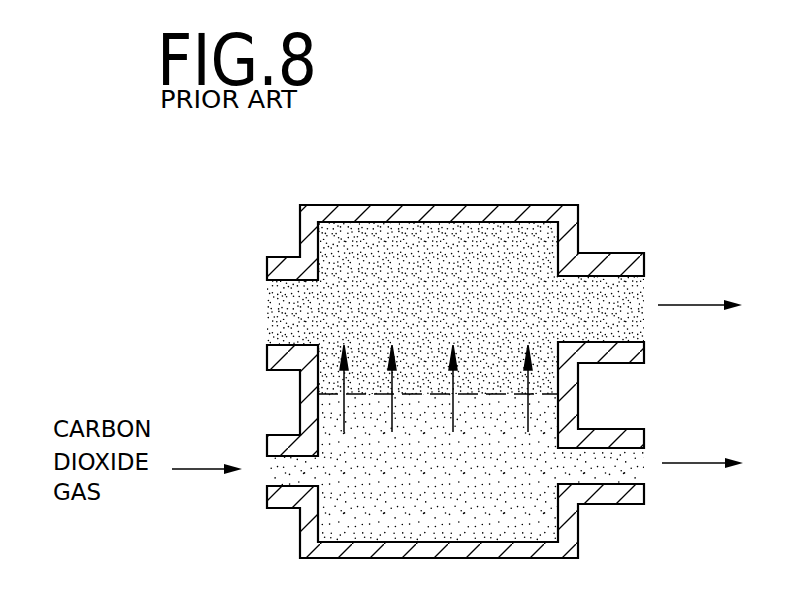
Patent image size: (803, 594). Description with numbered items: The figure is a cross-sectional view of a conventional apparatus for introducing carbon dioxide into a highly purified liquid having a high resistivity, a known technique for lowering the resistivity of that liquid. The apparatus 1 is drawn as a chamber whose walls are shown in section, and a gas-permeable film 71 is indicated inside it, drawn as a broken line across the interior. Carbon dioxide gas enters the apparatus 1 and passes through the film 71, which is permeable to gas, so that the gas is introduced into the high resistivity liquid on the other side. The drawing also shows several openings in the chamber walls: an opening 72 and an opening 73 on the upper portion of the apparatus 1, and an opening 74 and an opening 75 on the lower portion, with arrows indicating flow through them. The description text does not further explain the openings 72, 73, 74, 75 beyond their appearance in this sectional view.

The carbon dioxide absorber (prior art) 1 is at (349, 248).
The film 71 is at (482, 393).
The upper left port 72 is at (298, 310).
The upper right outlet port 73 is at (624, 300).
The carbon dioxide gas inlet port 74 is at (272, 475).
The lower right outlet port 75 is at (623, 467).